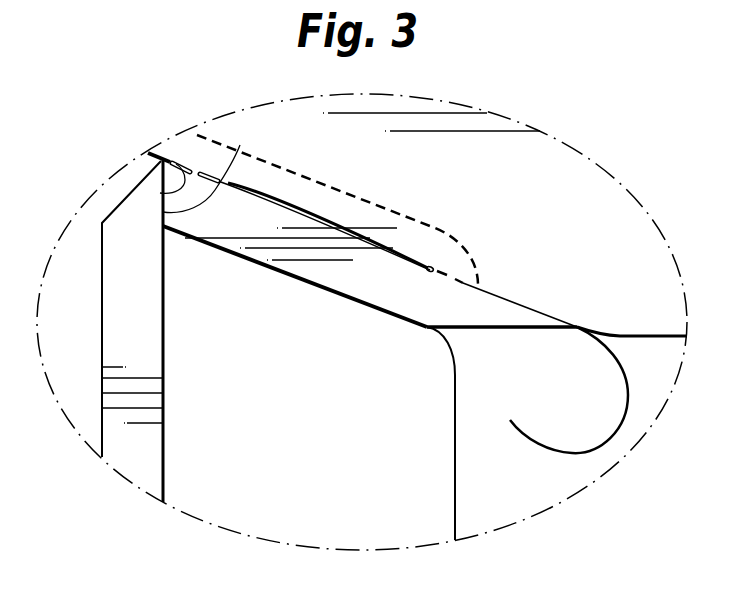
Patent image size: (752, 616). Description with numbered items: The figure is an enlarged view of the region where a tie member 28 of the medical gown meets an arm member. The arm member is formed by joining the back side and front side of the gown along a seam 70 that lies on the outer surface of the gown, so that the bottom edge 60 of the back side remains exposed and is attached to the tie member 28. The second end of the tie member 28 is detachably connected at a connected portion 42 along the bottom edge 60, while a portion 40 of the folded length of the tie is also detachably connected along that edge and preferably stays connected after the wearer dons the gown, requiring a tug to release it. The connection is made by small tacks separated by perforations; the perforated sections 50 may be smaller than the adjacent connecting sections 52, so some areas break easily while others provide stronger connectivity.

The tie member 28 is at (297, 263).
The portion of the folded length 40 is at (208, 167).
The connected portion 42 is at (452, 261).
The perforated section 50 is at (163, 212).
The connecting section 52 is at (197, 173).
The bottom edge 60 is at (370, 240).
The seam 70 is at (419, 216).